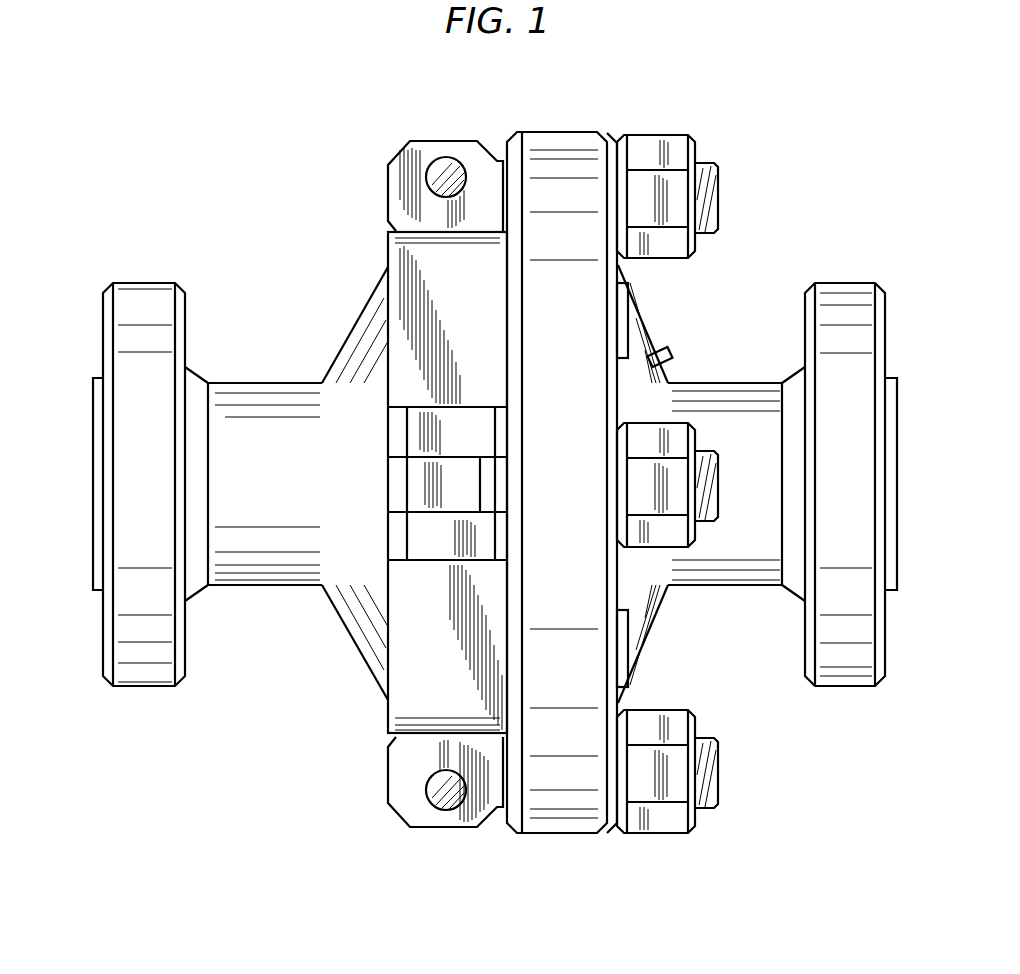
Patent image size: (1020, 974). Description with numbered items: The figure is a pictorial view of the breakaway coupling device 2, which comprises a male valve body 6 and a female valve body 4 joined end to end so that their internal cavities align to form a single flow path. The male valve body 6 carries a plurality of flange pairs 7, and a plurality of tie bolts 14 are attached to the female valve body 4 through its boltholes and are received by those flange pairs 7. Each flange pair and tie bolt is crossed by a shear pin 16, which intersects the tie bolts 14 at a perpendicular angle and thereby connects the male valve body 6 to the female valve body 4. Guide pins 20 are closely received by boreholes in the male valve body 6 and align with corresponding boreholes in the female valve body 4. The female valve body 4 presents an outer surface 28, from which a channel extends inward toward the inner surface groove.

The breakaway coupling device 2 is at (266, 247).
The female valve body 4 is at (848, 283).
The male valve body 6 is at (147, 283).
The flange pairs 7 is at (400, 532).
The tie bolts 14 is at (721, 193).
The shear pins 16 is at (438, 179).
The guide pins 20 is at (627, 642).
The outer surface 28 is at (666, 352).